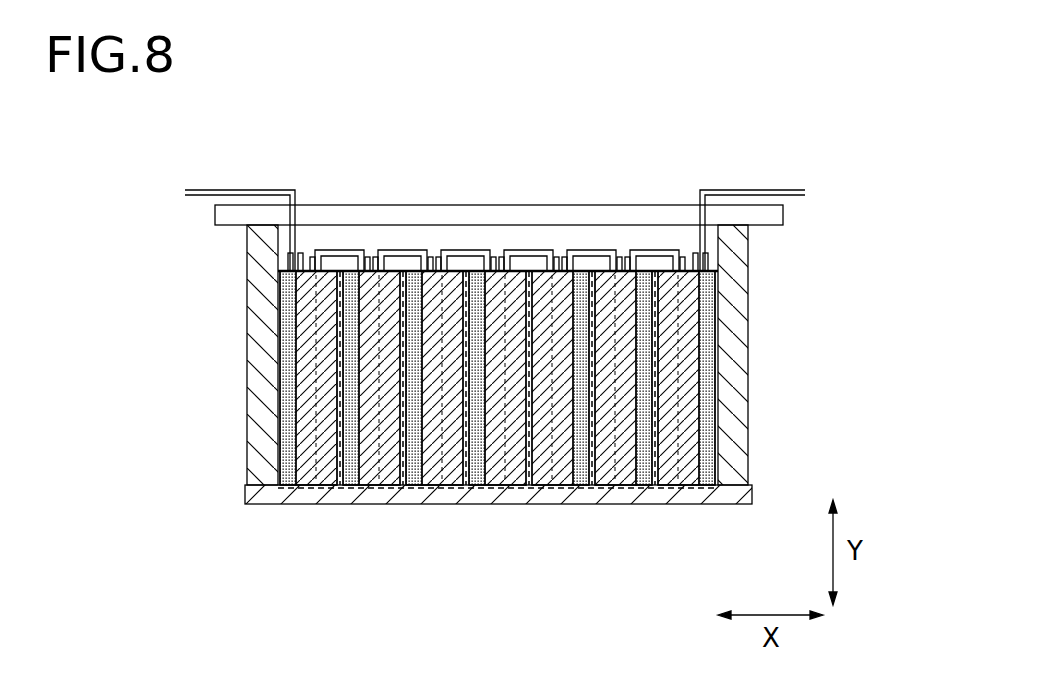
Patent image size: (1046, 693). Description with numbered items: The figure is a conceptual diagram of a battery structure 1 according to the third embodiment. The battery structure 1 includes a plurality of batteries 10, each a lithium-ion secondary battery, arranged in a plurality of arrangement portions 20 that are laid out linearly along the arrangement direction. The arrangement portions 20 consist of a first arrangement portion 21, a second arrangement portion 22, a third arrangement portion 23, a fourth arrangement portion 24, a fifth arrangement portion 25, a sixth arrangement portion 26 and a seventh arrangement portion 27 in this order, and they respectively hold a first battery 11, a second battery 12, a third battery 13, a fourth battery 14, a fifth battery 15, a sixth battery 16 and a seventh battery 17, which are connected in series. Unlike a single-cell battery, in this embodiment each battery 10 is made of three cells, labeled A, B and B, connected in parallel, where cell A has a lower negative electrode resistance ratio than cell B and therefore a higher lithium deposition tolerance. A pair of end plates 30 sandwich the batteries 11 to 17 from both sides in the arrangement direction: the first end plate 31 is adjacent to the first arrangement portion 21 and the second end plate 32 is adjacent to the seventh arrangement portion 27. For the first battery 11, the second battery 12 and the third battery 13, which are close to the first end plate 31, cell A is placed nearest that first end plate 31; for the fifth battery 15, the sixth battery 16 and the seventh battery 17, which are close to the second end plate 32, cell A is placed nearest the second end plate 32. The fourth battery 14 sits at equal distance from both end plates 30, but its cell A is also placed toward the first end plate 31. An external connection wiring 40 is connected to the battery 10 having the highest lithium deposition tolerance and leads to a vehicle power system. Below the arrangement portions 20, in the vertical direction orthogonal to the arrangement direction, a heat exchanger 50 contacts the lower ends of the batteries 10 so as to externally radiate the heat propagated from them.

The battery structure 1 is at (727, 100).
The battery 10 is at (488, 162).
The first battery 11 is at (318, 256).
The second battery 12 is at (373, 266).
The third battery 13 is at (433, 266).
The fourth battery 14 is at (497, 266).
The fifth battery 15 is at (560, 266).
The sixth battery 16 is at (623, 266).
The seventh battery 17 is at (673, 184).
The arrangement portion 20 is at (498, 436).
The first arrangement portion 21 is at (315, 488).
The second arrangement portion 22 is at (376, 488).
The third arrangement portion 23 is at (437, 488).
The fourth arrangement portion 24 is at (498, 488).
The fifth arrangement portion 25 is at (561, 488).
The sixth arrangement portion 26 is at (623, 488).
The seventh arrangement portion 27 is at (686, 414).
The end plate 30 is at (496, 345).
The first end plate 31 is at (263, 356).
The second end plate 32 is at (738, 356).
The external connection wiring 40 is at (183, 220).
The heat exchanger 50 is at (265, 496).